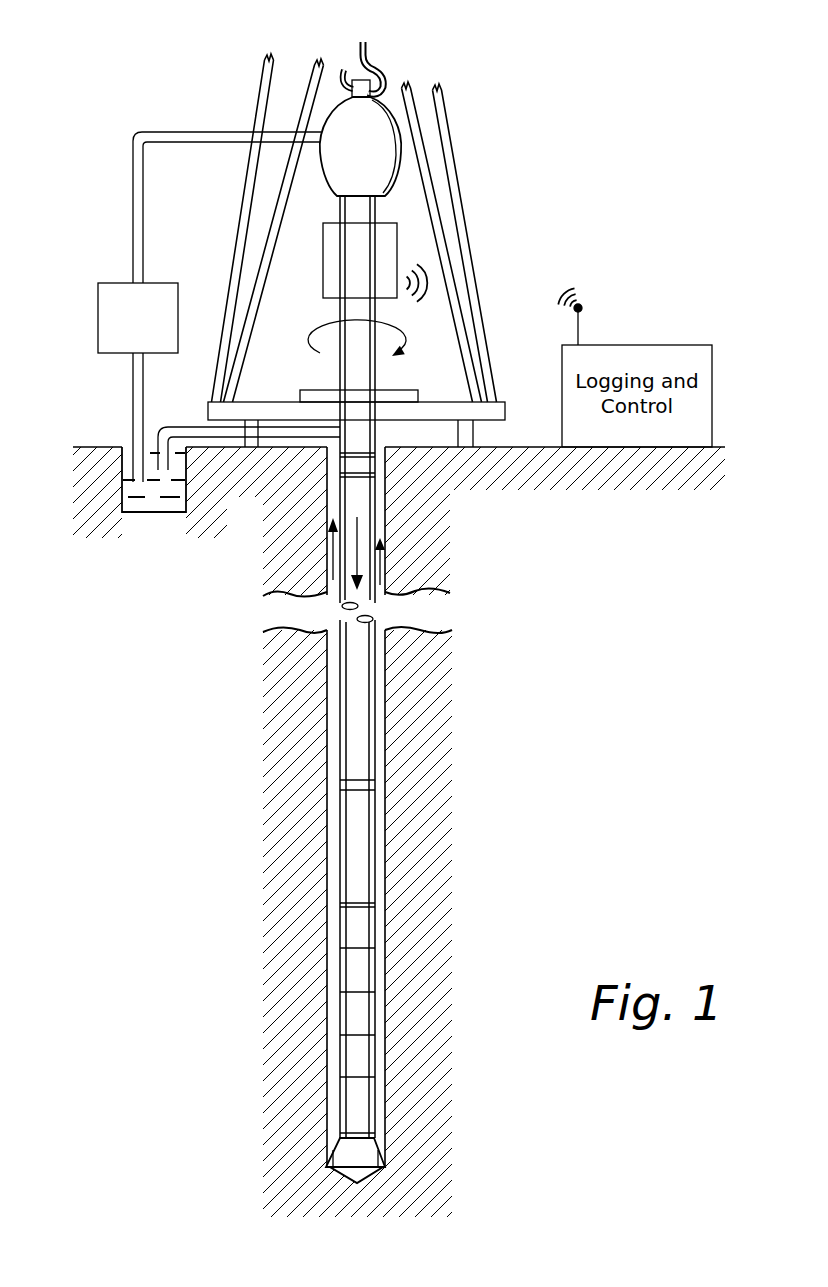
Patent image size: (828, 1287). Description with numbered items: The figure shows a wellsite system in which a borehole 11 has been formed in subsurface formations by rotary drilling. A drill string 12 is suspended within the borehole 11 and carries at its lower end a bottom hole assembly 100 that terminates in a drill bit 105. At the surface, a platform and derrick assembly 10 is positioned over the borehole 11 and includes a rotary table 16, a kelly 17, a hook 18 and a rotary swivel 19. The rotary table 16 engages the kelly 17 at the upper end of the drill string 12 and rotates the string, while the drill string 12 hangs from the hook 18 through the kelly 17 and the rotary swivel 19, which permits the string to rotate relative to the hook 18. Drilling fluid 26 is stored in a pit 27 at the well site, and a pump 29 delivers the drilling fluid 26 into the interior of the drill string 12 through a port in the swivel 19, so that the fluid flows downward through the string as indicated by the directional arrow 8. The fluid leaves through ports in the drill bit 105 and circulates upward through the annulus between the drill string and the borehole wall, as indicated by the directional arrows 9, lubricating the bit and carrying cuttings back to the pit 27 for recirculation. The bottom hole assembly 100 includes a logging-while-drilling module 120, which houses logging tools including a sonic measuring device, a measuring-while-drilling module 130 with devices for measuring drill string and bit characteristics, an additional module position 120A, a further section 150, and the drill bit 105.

The platform and derrick assembly 10 is at (500, 125).
The hook 18 is at (358, 55).
The rotary swivel 19 is at (375, 160).
The kelly 17 is at (350, 312).
The drill string 12 is at (352, 432).
The rotary table 16 is at (398, 392).
The pump 29 is at (98, 346).
The pit 27 is at (133, 437).
The drilling fluid 26 is at (148, 505).
The directional arrows 9 is at (333, 562).
The directional arrow 8 is at (330, 588).
The borehole 11 is at (385, 522).
The bottom hole assembly 100 is at (263, 908).
The logging-while-drilling module 120 is at (365, 968).
The measuring-while-drilling module 130 is at (358, 1010).
The additional LWD/MWD module 120A is at (362, 1053).
The tool section 150 is at (373, 1107).
The drill bit 105 is at (368, 1157).